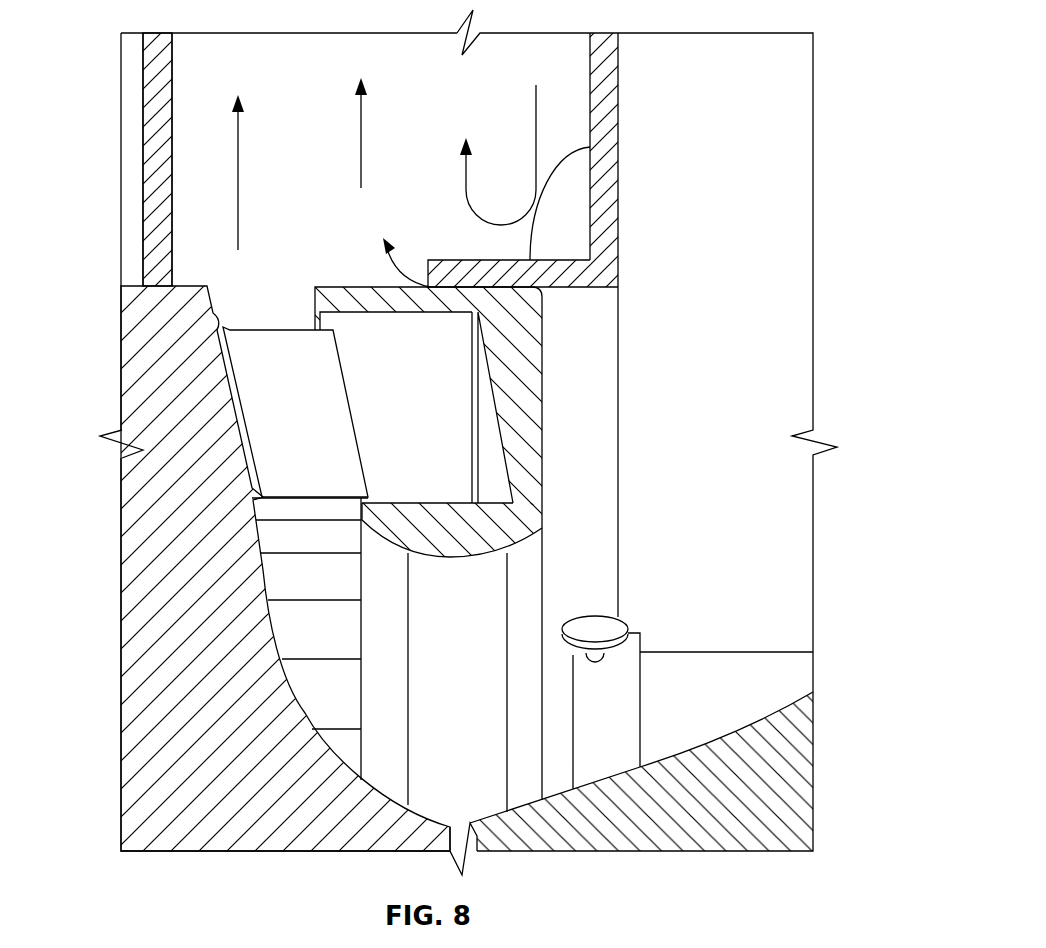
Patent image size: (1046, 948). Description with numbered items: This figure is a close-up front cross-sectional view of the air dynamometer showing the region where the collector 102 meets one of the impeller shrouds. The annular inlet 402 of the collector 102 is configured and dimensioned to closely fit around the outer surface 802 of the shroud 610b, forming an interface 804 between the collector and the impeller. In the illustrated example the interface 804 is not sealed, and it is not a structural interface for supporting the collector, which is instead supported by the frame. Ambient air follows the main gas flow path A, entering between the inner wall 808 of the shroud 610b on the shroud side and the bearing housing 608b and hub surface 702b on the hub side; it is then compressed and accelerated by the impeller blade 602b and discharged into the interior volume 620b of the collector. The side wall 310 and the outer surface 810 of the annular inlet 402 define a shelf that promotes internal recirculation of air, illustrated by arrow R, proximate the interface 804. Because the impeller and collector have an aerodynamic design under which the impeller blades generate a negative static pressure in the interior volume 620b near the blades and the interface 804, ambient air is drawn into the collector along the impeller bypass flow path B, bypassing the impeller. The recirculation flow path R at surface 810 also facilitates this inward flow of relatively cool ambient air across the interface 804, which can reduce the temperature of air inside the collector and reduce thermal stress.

The collector 102 is at (620, 200).
The side wall 310 is at (600, 92).
The annular inlet 402 is at (563, 270).
The outer surface of annular inlet 810 is at (593, 163).
The interface 804 is at (640, 278).
The recirculation flow path R is at (537, 142).
The interior volume 620b is at (456, 122).
The outer surface of shroud 802 is at (358, 272).
The shroud 610b is at (528, 405).
The impeller bypass flow path B is at (543, 292).
The hub surface 702b is at (300, 713).
The impeller blade 602b is at (273, 437).
The inner wall of shroud 808 is at (486, 683).
The bearing housing 608b is at (790, 767).
The main gas flow path A is at (281, 313).